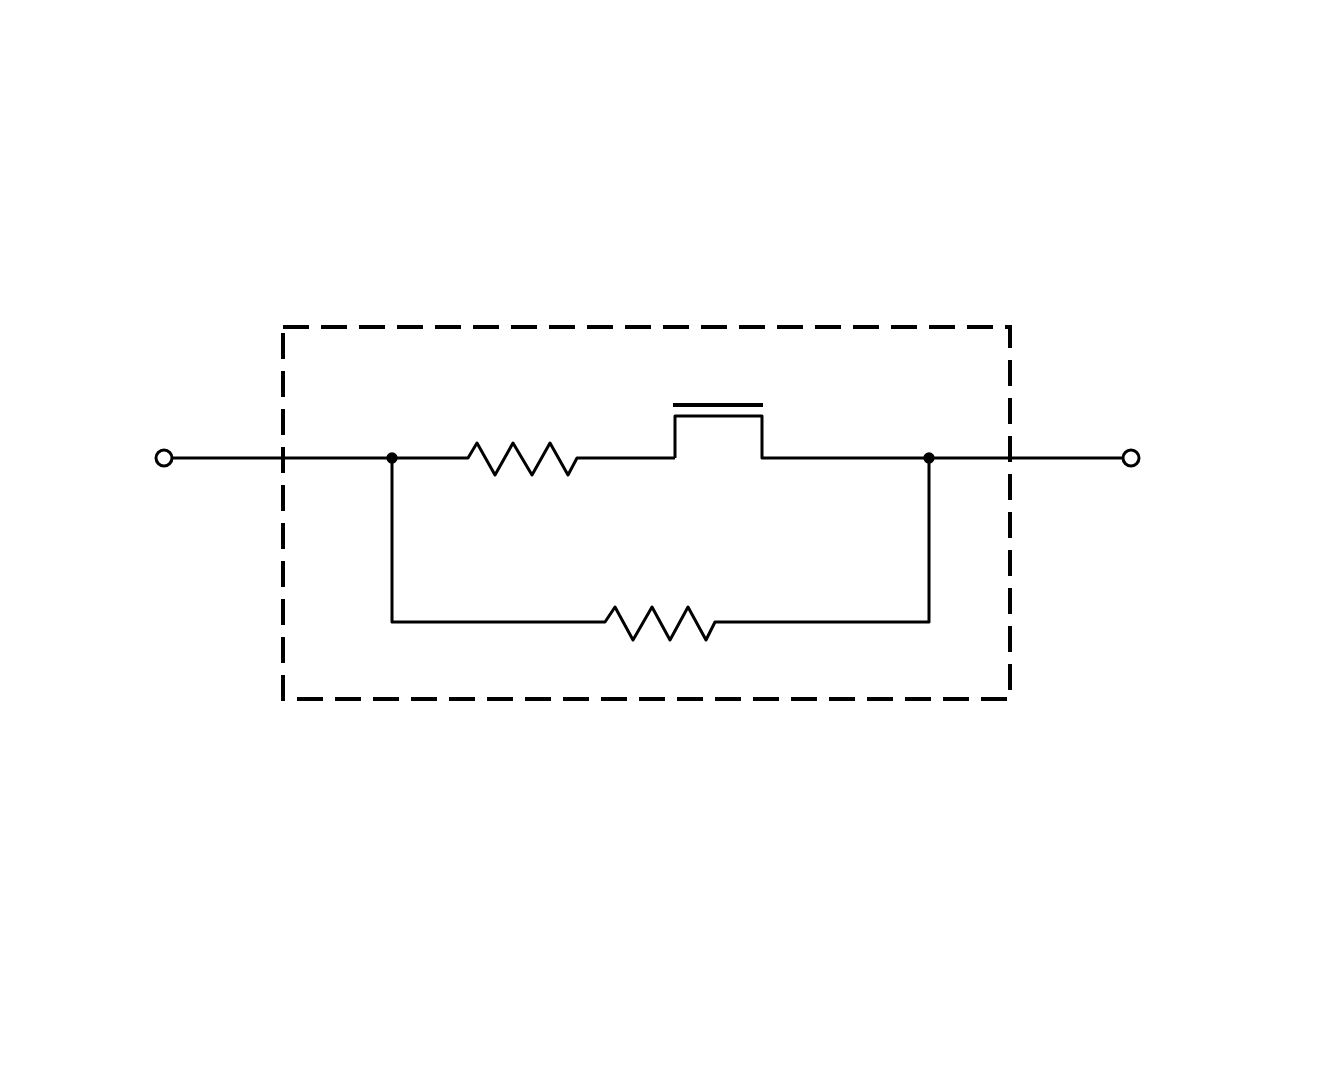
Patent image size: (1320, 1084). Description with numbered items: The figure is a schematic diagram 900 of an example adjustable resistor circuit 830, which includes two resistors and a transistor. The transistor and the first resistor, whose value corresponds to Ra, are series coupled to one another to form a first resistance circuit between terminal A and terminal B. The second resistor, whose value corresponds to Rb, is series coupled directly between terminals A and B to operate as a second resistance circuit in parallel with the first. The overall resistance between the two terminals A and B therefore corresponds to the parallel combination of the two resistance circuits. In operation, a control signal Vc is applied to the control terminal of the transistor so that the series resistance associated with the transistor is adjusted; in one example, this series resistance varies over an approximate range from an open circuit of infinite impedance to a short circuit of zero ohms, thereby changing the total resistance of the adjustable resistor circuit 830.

The schematic diagram 900 is at (1187, 170).
The adjustable resistor circuit 830 is at (408, 325).
The terminal A is at (269, 431).
The terminal B is at (1040, 431).
The first resistor value Ra is at (533, 424).
The second resistor value Rb is at (660, 549).
The control signal Vc is at (718, 405).